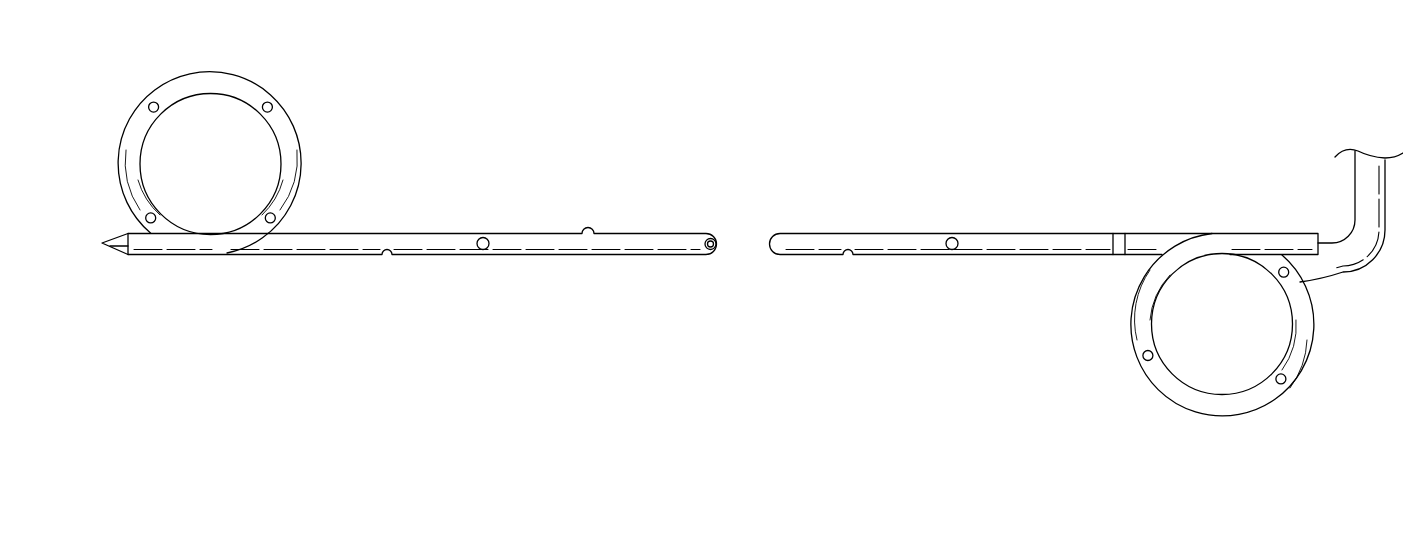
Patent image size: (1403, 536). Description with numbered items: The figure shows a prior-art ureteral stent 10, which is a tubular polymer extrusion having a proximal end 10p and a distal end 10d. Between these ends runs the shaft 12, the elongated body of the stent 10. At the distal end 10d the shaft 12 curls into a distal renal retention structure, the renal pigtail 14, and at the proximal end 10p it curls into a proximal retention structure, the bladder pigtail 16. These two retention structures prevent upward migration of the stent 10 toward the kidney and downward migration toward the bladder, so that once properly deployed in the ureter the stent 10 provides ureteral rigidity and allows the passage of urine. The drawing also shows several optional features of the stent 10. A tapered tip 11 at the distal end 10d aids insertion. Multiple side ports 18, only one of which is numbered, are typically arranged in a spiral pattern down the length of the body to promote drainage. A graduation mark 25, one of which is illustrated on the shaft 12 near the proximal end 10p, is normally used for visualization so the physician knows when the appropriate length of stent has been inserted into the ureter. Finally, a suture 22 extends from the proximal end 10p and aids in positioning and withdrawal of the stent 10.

The stent 10 is at (750, 144).
The distal end 10d is at (421, 213).
The proximal end 10p is at (1171, 197).
The tapered tip 11 is at (119, 251).
The shaft 12 is at (673, 242).
The renal pigtail 14 is at (290, 143).
The bladder pigtail 16 is at (1146, 313).
The side port 18 is at (953, 237).
The suture 22 is at (1341, 274).
The graduation mark 25 is at (1122, 232).